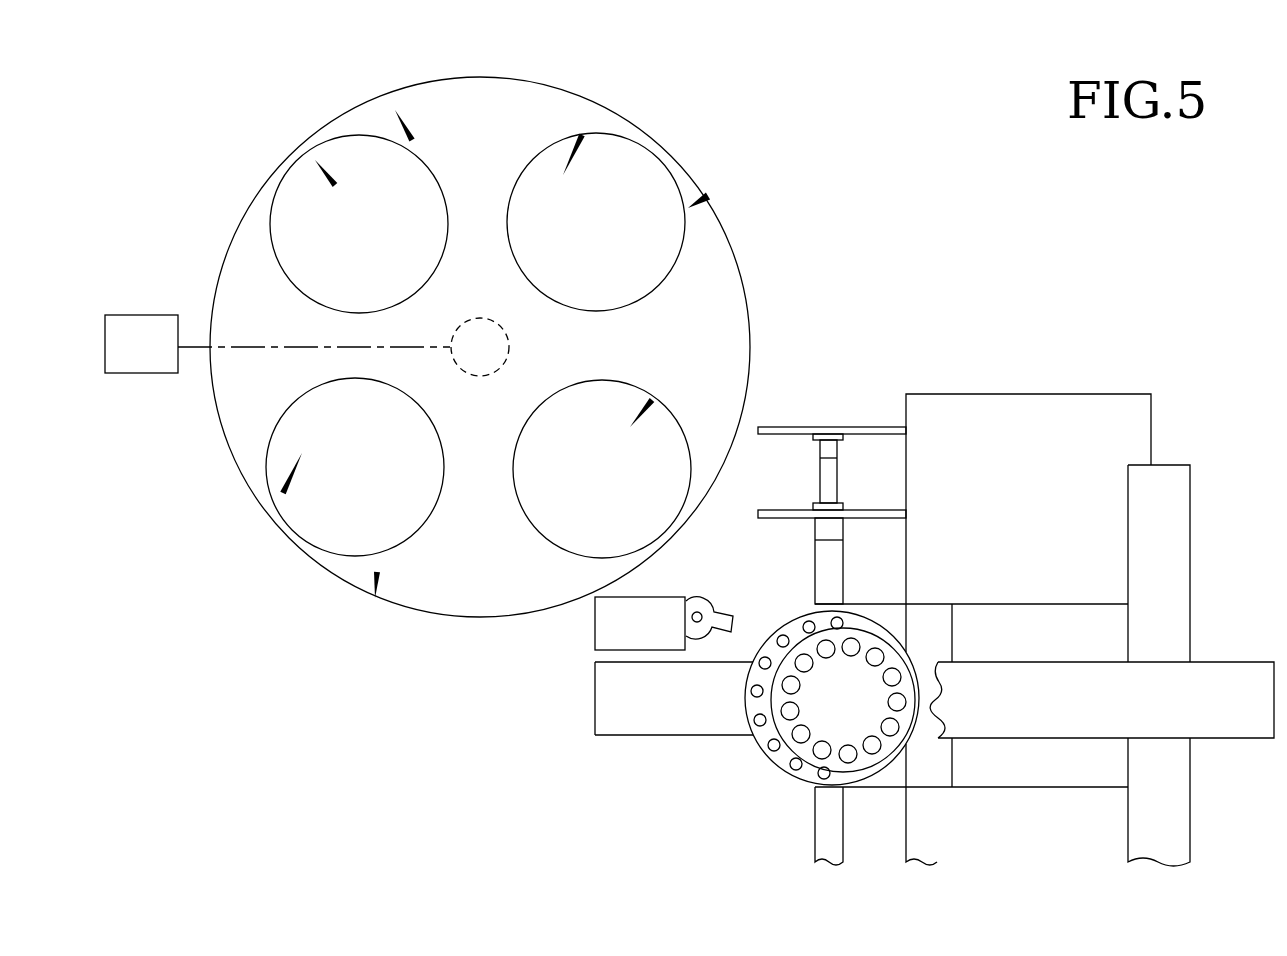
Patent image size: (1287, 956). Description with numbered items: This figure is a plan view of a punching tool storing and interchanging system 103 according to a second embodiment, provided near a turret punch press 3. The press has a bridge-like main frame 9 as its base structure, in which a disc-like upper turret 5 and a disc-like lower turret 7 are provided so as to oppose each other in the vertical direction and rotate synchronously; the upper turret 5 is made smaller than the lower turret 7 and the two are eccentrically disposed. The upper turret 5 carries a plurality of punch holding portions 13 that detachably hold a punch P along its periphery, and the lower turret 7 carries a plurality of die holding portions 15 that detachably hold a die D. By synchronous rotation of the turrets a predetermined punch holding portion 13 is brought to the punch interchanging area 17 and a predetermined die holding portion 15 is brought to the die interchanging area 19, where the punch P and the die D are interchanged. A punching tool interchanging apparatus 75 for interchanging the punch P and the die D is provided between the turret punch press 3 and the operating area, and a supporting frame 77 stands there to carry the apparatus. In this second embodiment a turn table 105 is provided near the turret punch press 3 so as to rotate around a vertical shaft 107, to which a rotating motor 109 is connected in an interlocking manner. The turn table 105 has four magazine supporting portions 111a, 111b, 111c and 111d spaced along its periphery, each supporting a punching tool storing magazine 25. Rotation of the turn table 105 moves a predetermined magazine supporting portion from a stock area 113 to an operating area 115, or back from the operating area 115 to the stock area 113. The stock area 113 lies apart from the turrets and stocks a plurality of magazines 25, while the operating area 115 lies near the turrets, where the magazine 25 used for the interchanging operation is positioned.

The punching tool storing and interchanging system 103 is at (838, 166).
The turn table 105 is at (750, 302).
The vertical shaft 107 is at (510, 348).
The rotating motor 109 is at (148, 315).
The punching tool storing magazine 25 is at (275, 228).
The stock area 113 is at (395, 110).
The magazine supporting portion 111a is at (655, 398).
The magazine supporting portion 111b is at (587, 132).
The magazine supporting portion 111c is at (305, 158).
The magazine supporting portion 111d is at (275, 505).
The operating area 115 is at (712, 423).
The turret punch press 3 is at (1216, 506).
The main frame 9 is at (1210, 667).
The supporting frame 77 is at (594, 632).
The punching tool interchanging apparatus 75 is at (707, 589).
The lower turret 7 is at (762, 758).
The upper turret 5 is at (815, 772).
The punch holding portion 13 is at (818, 742).
The die holding portion 15 is at (753, 705).
The punch interchanging area 17 is at (794, 617).
The die interchanging area 19 is at (760, 646).
The die D is at (777, 630).
The punch P is at (882, 655).